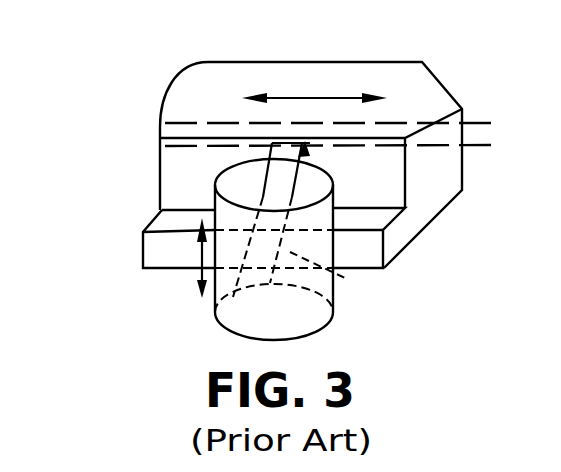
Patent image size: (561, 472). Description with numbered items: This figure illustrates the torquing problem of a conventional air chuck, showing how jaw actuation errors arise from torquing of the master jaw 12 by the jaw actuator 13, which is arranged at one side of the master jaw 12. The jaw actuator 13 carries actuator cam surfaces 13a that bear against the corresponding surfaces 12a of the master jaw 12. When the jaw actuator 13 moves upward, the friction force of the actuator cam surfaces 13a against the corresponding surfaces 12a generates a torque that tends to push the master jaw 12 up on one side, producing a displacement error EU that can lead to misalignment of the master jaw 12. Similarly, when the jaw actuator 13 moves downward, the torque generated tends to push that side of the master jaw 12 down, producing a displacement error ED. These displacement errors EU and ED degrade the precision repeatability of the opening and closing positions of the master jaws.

The master jaw 12 is at (425, 81).
The corresponding surfaces 12a is at (333, 267).
The jaw actuator 13 is at (300, 322).
The actuator cam surfaces 13a is at (307, 150).
The displacement error EU is at (345, 105).
The displacement error ED is at (345, 158).